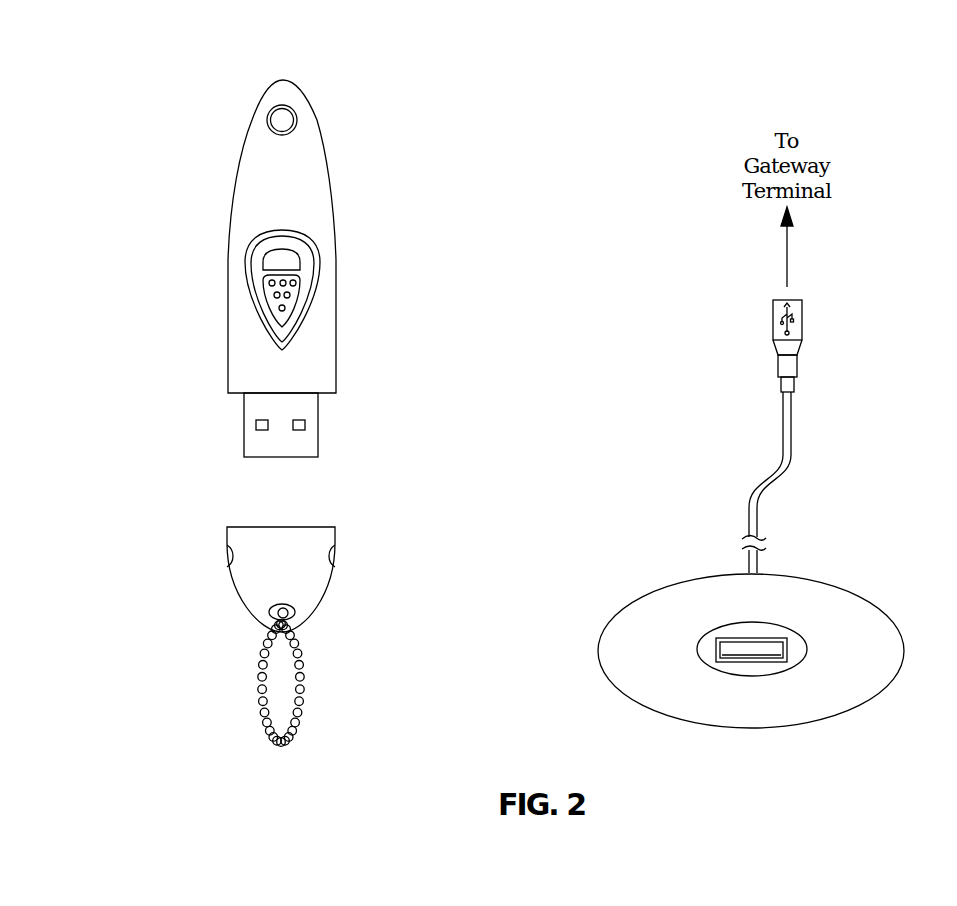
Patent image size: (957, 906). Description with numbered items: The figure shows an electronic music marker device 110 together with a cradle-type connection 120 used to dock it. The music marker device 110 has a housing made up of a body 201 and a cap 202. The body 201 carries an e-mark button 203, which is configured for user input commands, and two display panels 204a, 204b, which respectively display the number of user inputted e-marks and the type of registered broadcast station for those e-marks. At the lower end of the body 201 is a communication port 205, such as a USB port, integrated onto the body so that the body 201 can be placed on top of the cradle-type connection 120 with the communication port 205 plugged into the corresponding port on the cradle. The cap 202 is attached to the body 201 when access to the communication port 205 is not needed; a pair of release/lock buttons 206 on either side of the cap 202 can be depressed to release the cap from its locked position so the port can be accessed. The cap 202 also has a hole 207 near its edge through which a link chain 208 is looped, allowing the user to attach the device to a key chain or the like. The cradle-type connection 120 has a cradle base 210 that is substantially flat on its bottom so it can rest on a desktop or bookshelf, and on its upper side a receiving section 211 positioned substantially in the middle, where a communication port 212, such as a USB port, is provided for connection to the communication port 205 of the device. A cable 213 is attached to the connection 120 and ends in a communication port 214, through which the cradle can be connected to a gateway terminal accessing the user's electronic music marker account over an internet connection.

The music marker device 110 is at (168, 80).
The body 201 is at (331, 182).
The e-mark button 203 is at (283, 120).
The display panel 204a is at (268, 250).
The display panel 204b is at (268, 307).
The communication port 205 is at (243, 427).
The cap 202 is at (325, 600).
The release/lock buttons 206 is at (228, 558).
The hole 207 is at (266, 616).
The link chain 208 is at (302, 696).
The cradle-type connection 120 is at (697, 258).
The communication port 214 is at (773, 332).
The cable 213 is at (782, 437).
The cradle base 210 is at (826, 582).
The receiving section 211 is at (780, 640).
The communication port 212 is at (765, 655).